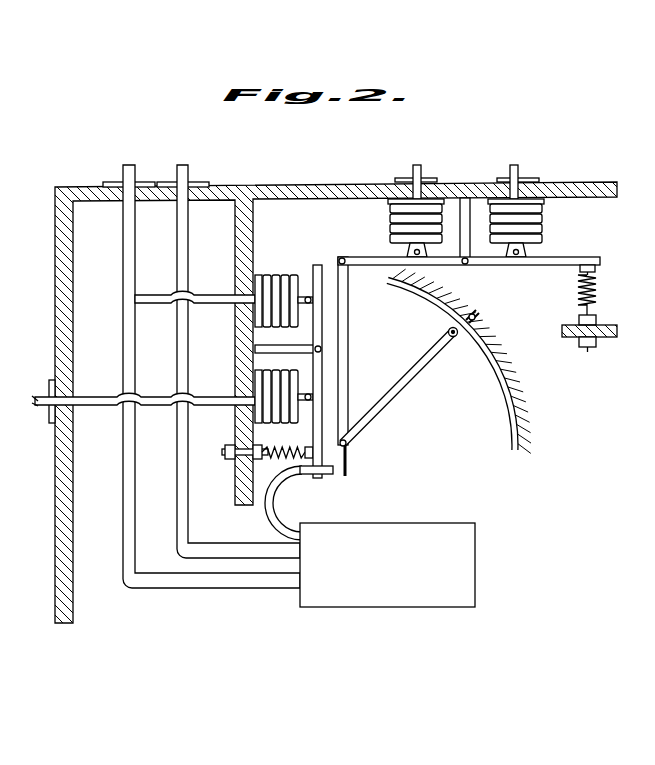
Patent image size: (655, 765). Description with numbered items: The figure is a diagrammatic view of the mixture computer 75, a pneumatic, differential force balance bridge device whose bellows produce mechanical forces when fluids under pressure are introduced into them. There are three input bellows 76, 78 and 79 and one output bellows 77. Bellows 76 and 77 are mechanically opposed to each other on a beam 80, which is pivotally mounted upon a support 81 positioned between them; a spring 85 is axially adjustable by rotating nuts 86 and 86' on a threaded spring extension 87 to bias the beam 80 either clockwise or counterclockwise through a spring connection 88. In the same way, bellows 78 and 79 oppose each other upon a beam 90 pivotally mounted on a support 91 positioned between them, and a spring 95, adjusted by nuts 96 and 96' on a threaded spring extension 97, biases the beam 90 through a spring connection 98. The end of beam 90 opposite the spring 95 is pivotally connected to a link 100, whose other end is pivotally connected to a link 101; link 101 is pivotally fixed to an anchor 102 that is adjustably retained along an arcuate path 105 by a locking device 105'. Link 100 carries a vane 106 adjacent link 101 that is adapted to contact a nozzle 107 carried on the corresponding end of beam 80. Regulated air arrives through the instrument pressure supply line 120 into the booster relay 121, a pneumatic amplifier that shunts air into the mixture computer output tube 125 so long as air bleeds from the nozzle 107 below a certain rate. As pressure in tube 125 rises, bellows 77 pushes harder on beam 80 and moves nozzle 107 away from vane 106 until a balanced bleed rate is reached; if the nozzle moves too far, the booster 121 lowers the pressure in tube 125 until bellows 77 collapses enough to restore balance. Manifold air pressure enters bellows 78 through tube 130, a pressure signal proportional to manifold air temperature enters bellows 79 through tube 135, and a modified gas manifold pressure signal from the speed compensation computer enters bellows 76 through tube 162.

The mixture computer 75 is at (78, 626).
The input bellows 76 is at (282, 421).
The output bellows 77 is at (265, 275).
The input bellows 78 is at (391, 233).
The input bellows 79 is at (543, 227).
The beam 80 is at (318, 265).
The support 81 is at (255, 349).
The spring 85 is at (275, 462).
The nut 86 is at (232, 470).
The nut 86' is at (230, 483).
The threaded spring extension 87 is at (226, 452).
The spring connection 88 is at (313, 446).
The beam 90 is at (498, 266).
The support 91 is at (467, 199).
The spring 95 is at (597, 292).
The nut 96 is at (592, 343).
The nut 96' is at (615, 316).
The threaded spring extension 97 is at (584, 347).
The spring connection 98 is at (597, 269).
The link 100 is at (348, 338).
The link 101 is at (412, 386).
The anchor 102 is at (458, 340).
The arcuate path 105 is at (459, 361).
The locking device 105' is at (506, 322).
The vane 106 is at (347, 461).
The nozzle 107 is at (334, 474).
The instrument pressure supply line 120 is at (187, 174).
The booster relay 121 is at (478, 523).
The mixture computer output tube 125 is at (131, 174).
The tube 130 is at (418, 167).
The tube 135 is at (516, 169).
The tube 162 is at (40, 401).